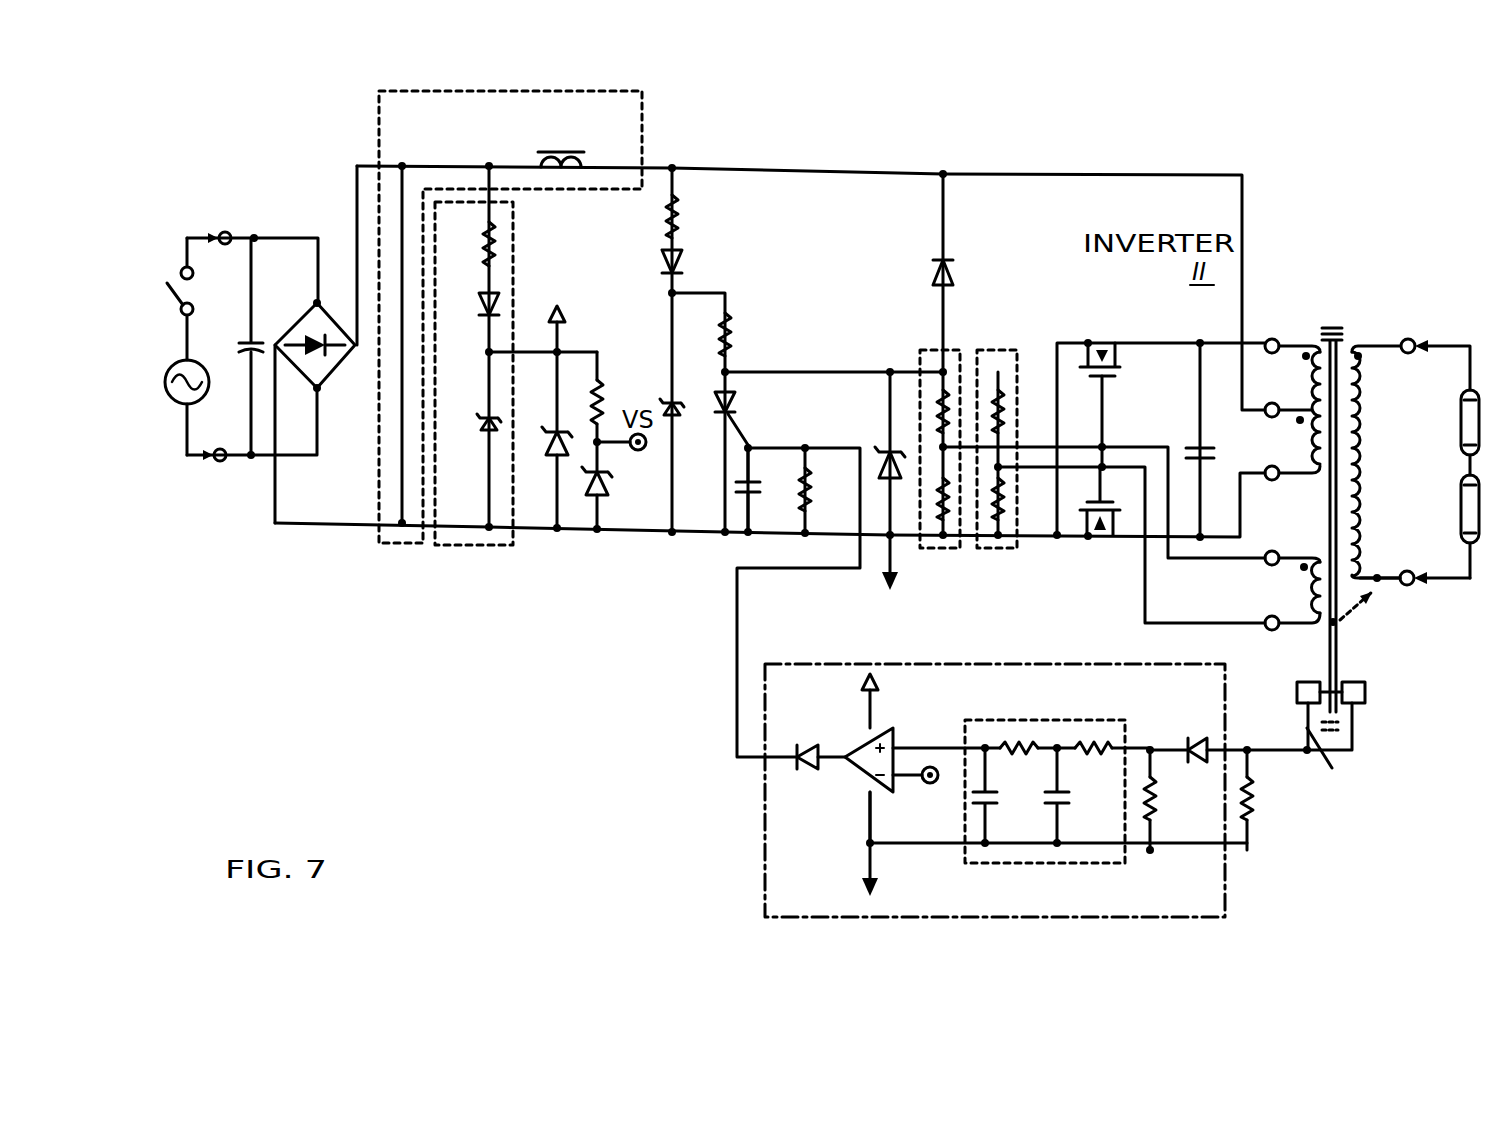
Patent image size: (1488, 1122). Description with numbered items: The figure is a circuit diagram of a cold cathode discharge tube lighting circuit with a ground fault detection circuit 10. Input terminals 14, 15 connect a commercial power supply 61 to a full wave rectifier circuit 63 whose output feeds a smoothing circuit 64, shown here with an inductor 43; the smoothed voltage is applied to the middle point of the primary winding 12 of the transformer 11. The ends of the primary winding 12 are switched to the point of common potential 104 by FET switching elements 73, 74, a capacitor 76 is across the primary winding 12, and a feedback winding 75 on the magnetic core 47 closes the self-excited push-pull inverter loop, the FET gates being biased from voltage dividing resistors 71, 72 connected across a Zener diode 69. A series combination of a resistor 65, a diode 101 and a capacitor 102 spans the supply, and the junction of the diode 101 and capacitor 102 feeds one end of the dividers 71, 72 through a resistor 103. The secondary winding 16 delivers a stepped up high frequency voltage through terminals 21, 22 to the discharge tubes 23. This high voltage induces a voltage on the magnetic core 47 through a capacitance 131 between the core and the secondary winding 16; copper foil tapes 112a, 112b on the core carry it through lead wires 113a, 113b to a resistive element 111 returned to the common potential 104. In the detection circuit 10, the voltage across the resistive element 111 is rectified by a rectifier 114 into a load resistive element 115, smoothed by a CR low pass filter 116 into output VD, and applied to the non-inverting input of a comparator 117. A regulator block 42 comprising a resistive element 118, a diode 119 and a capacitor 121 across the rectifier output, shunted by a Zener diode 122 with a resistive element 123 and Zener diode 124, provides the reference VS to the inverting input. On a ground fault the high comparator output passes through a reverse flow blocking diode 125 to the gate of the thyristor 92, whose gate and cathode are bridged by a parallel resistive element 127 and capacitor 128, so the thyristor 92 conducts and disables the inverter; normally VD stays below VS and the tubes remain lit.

The detection circuit 10 is at (764, 840).
The transformer 11 is at (1332, 318).
The primary winding 12 is at (1310, 344).
The input terminal 14 is at (224, 234).
The input terminal 15 is at (219, 462).
The secondary winding 16 is at (1362, 450).
The lamp terminal 21 is at (1412, 338).
The lamp terminal 22 is at (1412, 590).
The discharge tube 23 is at (1450, 420).
The voltage regulator 42 is at (474, 548).
The inductor 43 is at (578, 160).
The magnetic core 47 is at (1326, 538).
The commercial power supply 61 is at (177, 415).
The full wave rectifier circuit 63 is at (332, 375).
The smoothing circuit 64 is at (458, 91).
The resistor 65 is at (688, 230).
The Zener diode 69 is at (878, 447).
The voltage dividing resistor 71 is at (948, 350).
The voltage dividing resistor 72 is at (996, 350).
The switching element 73 is at (1100, 336).
The switching element 74 is at (1094, 545).
The feedback winding 75 is at (1300, 584).
The capacitor 76 is at (1184, 438).
The thyristor 92 is at (755, 402).
The diode 101 is at (688, 266).
The capacitor 102 is at (681, 420).
The resistor 103 is at (738, 340).
The point of common potential 104 is at (896, 584).
The resistive element 111 is at (1260, 800).
The copper foil tape 112a is at (1286, 690).
The copper foil tape 112b is at (1374, 696).
The lead wire 113a is at (1342, 769).
The lead wire 113b is at (1354, 744).
The rectifier 114 is at (1196, 738).
The rectifier load resistive element 115 is at (1162, 800).
The CR low pass filter 116 is at (1012, 724).
The comparator 117 is at (859, 773).
The resistive element 118 is at (482, 242).
The diode 119 is at (482, 318).
The capacitor 121 is at (482, 437).
The Zener diode 122 is at (557, 457).
The resistive element 123 is at (618, 394).
The Zener diode 124 is at (640, 476).
The reverse flow blocking diode 125 is at (802, 748).
The resistive element 127 is at (824, 486).
The capacitor 128 is at (764, 486).
The capacitance 131 is at (1358, 626).